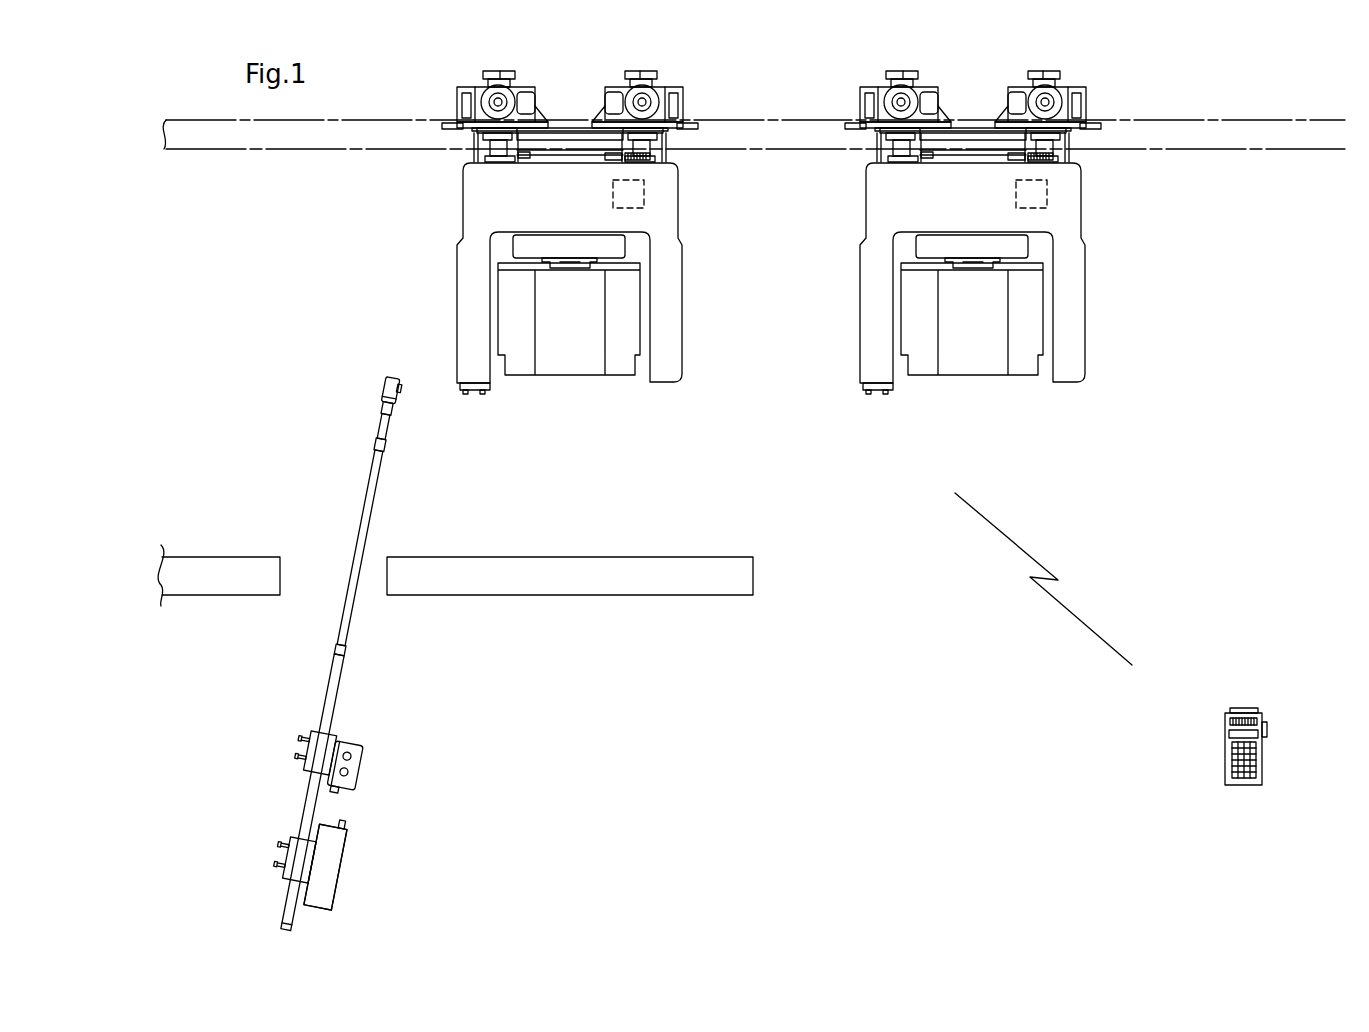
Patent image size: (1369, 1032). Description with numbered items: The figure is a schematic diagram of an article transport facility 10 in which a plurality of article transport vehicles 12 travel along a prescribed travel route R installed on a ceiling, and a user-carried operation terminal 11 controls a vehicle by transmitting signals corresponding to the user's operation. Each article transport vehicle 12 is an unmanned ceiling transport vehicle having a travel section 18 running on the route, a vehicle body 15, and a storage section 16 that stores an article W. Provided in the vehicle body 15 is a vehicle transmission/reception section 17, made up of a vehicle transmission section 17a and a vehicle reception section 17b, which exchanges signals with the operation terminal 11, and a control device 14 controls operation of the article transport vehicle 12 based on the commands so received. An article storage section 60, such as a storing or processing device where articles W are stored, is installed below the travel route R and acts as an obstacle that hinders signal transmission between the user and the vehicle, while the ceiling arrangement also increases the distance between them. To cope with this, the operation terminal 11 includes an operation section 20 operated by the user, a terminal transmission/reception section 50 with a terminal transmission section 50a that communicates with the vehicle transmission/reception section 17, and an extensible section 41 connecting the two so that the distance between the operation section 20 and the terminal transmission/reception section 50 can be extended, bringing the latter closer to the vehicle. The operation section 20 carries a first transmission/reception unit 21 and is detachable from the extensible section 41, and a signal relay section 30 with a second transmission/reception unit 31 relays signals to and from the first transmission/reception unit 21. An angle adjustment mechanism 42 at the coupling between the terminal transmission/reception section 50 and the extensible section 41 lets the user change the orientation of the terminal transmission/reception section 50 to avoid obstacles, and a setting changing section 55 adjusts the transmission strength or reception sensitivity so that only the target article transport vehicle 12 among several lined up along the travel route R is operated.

The article transport facility 10 is at (182, 100).
The travel route R is at (322, 151).
The operation terminal 11 is at (283, 634).
The article transport vehicle 12 is at (695, 359).
The control device 14 is at (645, 193).
The vehicle body 15 is at (678, 273).
The storage section 16 is at (644, 392).
The vehicle transmission/reception section 17 is at (472, 385).
The vehicle transmission section 17a is at (482, 394).
The vehicle reception section 17b is at (465, 394).
The travel section 18 is at (518, 90).
The operation section 20 is at (1223, 750).
The first transmission/reception unit 21 is at (341, 824).
The signal relay section 30 is at (344, 768).
The second transmission/reception unit 31 is at (334, 789).
The extensible section 41 is at (336, 671).
The angle adjustment mechanism 42 is at (387, 409).
The terminal transmission/reception section 50 is at (391, 391).
The terminal transmission section 50a is at (398, 388).
The setting changing section 55 is at (315, 752).
The article storage section 60 is at (210, 595).
The article W is at (568, 368).